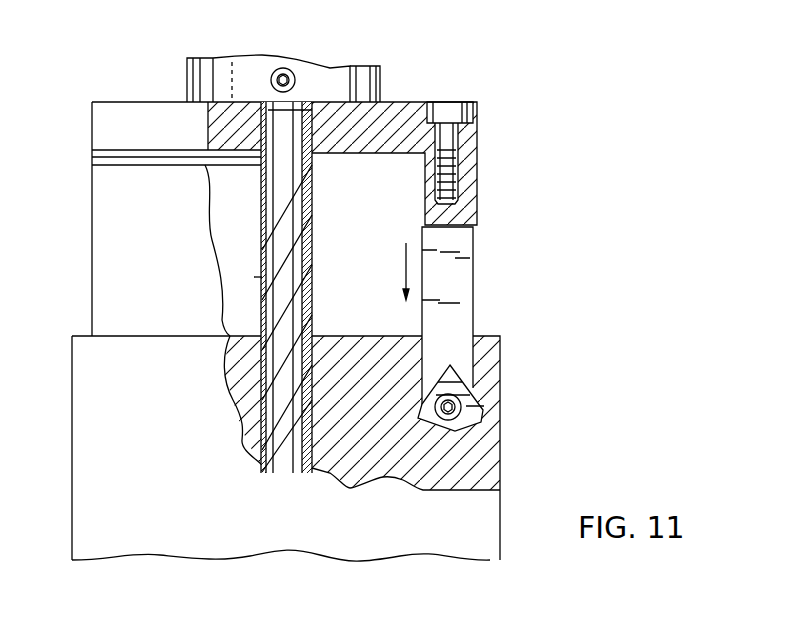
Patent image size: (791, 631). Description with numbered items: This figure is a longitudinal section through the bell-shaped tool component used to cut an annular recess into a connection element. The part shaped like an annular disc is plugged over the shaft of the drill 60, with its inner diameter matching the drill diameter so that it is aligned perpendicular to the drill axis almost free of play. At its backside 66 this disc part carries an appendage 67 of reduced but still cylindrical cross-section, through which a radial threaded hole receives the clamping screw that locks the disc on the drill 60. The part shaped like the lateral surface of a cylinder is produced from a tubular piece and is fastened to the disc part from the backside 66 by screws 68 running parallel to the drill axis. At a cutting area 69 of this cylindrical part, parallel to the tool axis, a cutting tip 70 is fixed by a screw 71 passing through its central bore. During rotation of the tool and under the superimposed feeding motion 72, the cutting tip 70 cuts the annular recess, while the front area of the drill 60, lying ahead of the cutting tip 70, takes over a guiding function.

The drill 60 is at (297, 186).
The backside 66 is at (418, 100).
The appendage 67 is at (248, 60).
The screws 68 is at (458, 100).
The cutting area 69 is at (470, 250).
The cutting tip 70 is at (447, 366).
The screw 71 is at (463, 405).
The feeding motion 72 is at (406, 258).